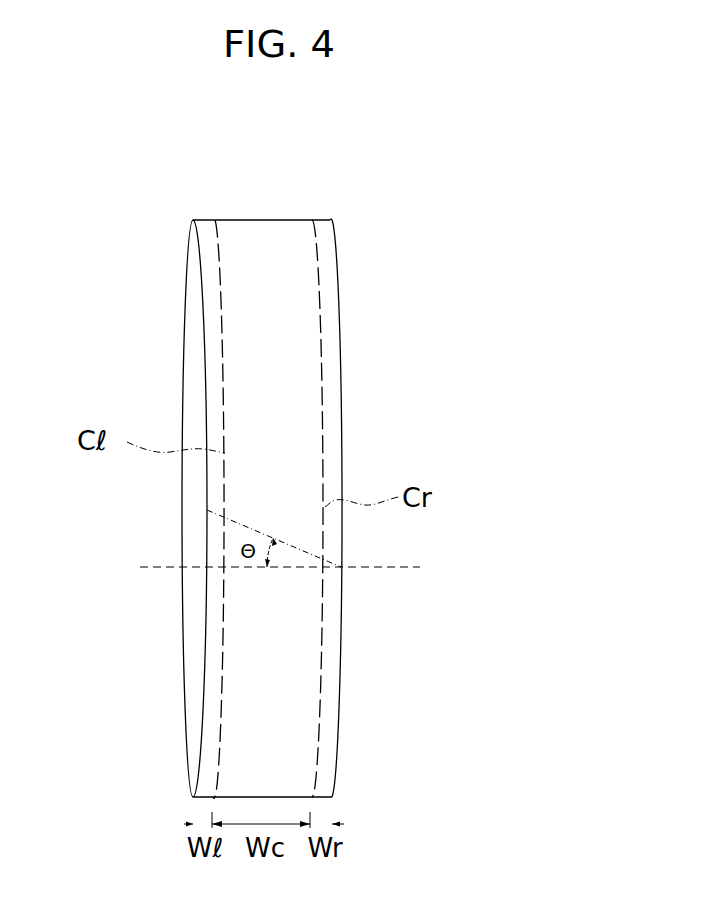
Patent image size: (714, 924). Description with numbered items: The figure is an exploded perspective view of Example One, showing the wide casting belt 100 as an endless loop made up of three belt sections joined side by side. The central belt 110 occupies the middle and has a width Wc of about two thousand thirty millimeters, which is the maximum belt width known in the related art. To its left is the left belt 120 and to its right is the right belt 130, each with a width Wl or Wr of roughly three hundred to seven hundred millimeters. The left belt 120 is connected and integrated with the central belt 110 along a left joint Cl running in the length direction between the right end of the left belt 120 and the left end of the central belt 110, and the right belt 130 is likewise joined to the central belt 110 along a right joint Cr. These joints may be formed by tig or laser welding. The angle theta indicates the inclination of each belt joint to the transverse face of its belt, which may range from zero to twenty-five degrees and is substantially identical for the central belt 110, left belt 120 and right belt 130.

The wide casting belt 100 is at (283, 469).
The central belt 110 is at (280, 313).
The left belt 120 is at (212, 353).
The right belt 130 is at (328, 418).